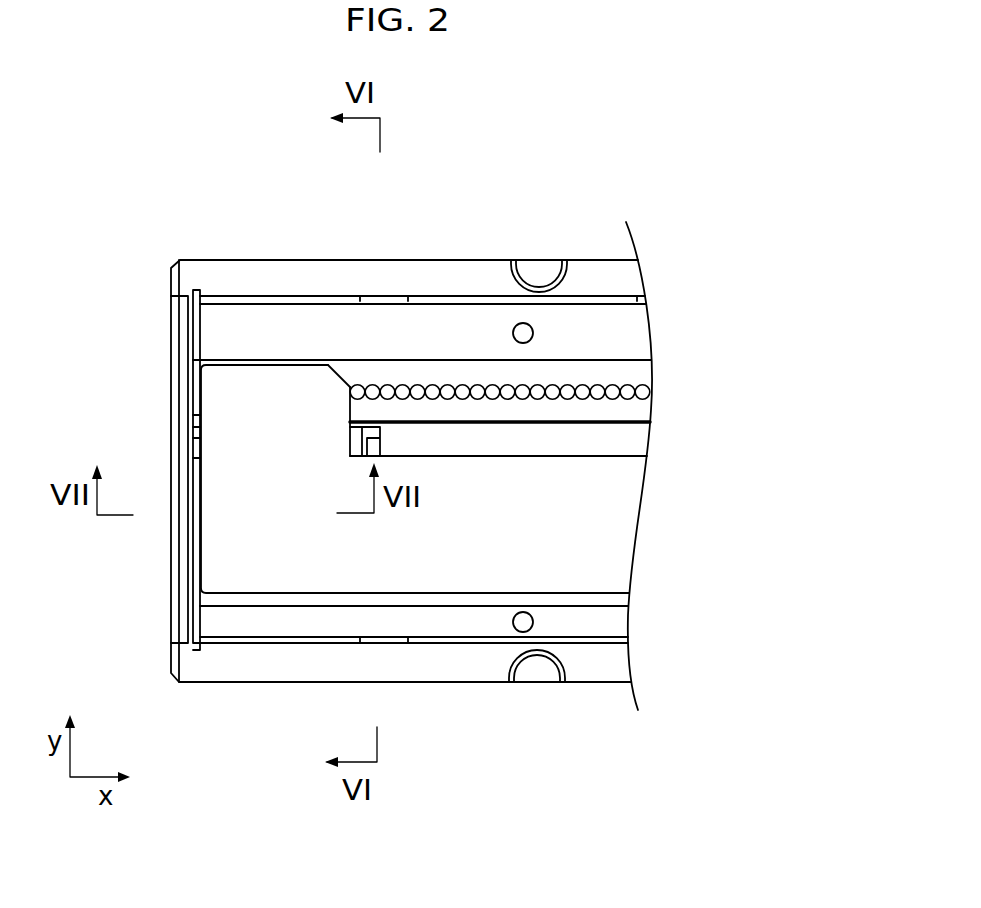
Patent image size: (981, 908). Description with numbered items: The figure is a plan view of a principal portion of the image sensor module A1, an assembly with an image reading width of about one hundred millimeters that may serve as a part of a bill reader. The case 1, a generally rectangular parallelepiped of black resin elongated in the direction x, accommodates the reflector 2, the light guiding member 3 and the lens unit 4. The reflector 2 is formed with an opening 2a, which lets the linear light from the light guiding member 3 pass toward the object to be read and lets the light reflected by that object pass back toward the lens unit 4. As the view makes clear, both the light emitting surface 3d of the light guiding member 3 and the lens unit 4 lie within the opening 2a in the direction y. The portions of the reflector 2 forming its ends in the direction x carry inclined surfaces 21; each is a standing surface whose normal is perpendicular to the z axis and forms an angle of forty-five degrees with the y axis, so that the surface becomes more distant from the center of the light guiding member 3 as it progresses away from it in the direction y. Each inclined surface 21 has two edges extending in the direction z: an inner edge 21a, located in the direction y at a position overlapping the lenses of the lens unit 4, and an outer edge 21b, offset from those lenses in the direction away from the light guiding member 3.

The image sensor module A1 is at (147, 215).
The case 1 is at (179, 426).
The reflector 2 is at (227, 565).
The opening 2a is at (399, 415).
The light guiding member 3 is at (500, 439).
The light emitting surface 3d is at (495, 440).
The lens unit 4 is at (560, 392).
The inclined surface 21 is at (343, 378).
The inner edge 21a is at (342, 396).
The outer edge 21b is at (320, 371).